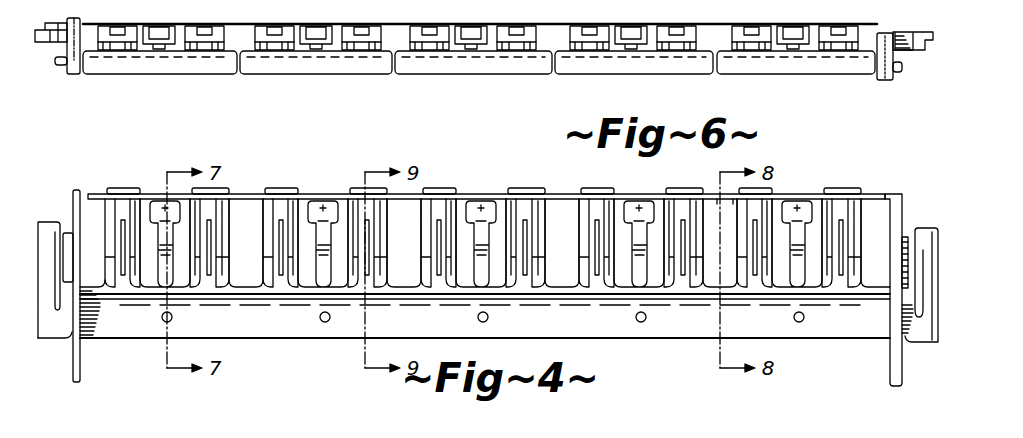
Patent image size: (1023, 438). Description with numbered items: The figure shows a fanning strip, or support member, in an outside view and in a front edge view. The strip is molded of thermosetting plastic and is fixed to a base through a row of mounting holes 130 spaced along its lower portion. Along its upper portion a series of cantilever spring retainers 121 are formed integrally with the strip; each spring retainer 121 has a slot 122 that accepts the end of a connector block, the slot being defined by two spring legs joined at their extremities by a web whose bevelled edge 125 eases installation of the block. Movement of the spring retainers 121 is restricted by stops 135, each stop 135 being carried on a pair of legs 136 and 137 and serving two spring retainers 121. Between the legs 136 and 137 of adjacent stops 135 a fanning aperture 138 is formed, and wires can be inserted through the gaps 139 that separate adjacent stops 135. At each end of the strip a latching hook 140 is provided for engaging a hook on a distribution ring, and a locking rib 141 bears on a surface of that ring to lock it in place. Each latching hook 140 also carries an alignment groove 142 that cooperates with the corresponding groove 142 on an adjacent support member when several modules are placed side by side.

In FIG. 6, the cantilever spring retainer 121 is at (541, 36).
In FIG. 6, the slot 122 is at (523, 34).
In FIG. 6, the bevelled edge 125 is at (513, 34).
In FIG. 4, the mounting hole 130 is at (327, 322).
In FIG. 6, the stop 135 is at (843, 76).
In FIG. 4, the stop 135 is at (493, 192).
In FIG. 4, the leg 136 is at (541, 201).
In FIG. 4, the leg 137 is at (450, 199).
In FIG. 4, the fanning aperture 138 is at (716, 258).
In FIG. 4, the gap 139 is at (724, 198).
In FIG. 6, the latching hook 140 is at (913, 50).
In FIG. 4, the latching hook 140 is at (923, 248).
In FIG. 6, the locking rib 141 is at (902, 67).
In FIG. 4, the locking rib 141 is at (903, 240).
In FIG. 6, the alignment groove 142 is at (931, 47).
In FIG. 4, the alignment groove 142 is at (932, 294).